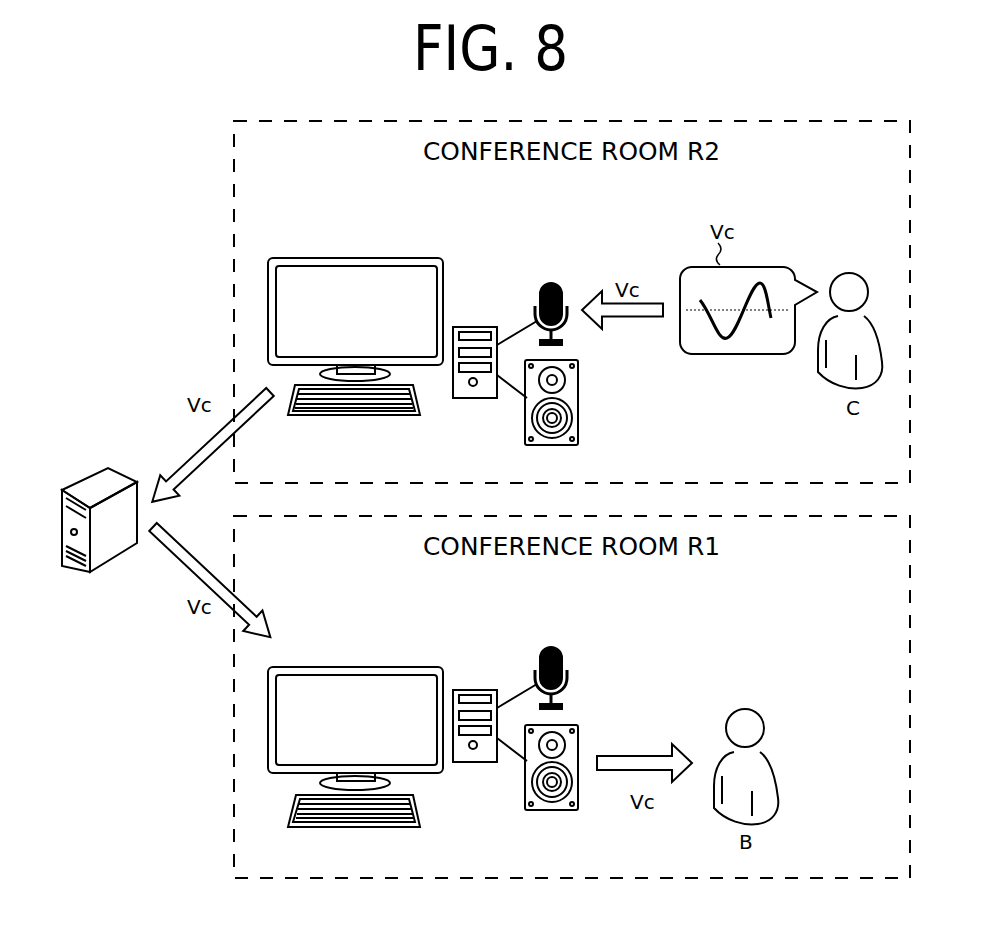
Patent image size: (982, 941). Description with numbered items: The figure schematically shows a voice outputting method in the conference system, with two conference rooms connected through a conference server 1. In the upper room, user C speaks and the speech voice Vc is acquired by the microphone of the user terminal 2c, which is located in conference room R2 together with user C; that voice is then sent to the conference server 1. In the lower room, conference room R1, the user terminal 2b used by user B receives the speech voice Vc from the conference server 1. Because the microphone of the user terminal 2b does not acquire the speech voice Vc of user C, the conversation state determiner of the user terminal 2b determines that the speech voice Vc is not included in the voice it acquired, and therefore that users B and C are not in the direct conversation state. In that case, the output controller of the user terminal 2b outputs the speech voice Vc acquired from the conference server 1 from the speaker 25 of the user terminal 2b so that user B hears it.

The conference server 1 is at (86, 476).
The user terminal 2c is at (384, 229).
The user terminal 2b is at (399, 620).
The speaker 25 is at (552, 812).